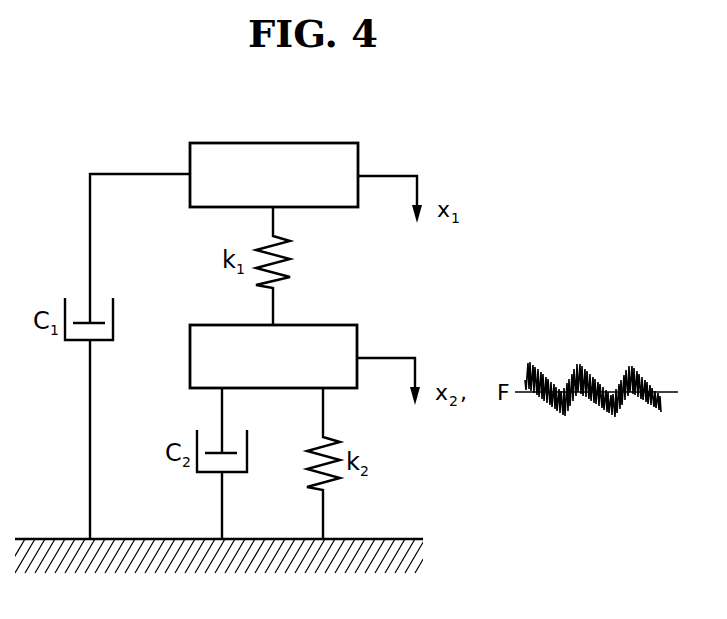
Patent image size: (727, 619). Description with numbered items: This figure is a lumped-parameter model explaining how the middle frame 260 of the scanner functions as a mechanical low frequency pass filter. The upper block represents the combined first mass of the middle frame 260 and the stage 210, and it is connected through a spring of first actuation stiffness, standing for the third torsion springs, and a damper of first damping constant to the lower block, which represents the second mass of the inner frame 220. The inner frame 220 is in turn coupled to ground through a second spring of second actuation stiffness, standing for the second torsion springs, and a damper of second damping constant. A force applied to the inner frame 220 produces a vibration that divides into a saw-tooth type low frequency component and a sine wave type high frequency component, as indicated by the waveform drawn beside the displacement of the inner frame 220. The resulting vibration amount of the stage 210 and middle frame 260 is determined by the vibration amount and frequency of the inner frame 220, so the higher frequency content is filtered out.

The stage 210 is at (362, 164).
The middle frame 260 is at (358, 157).
The inner frame 220 is at (357, 340).